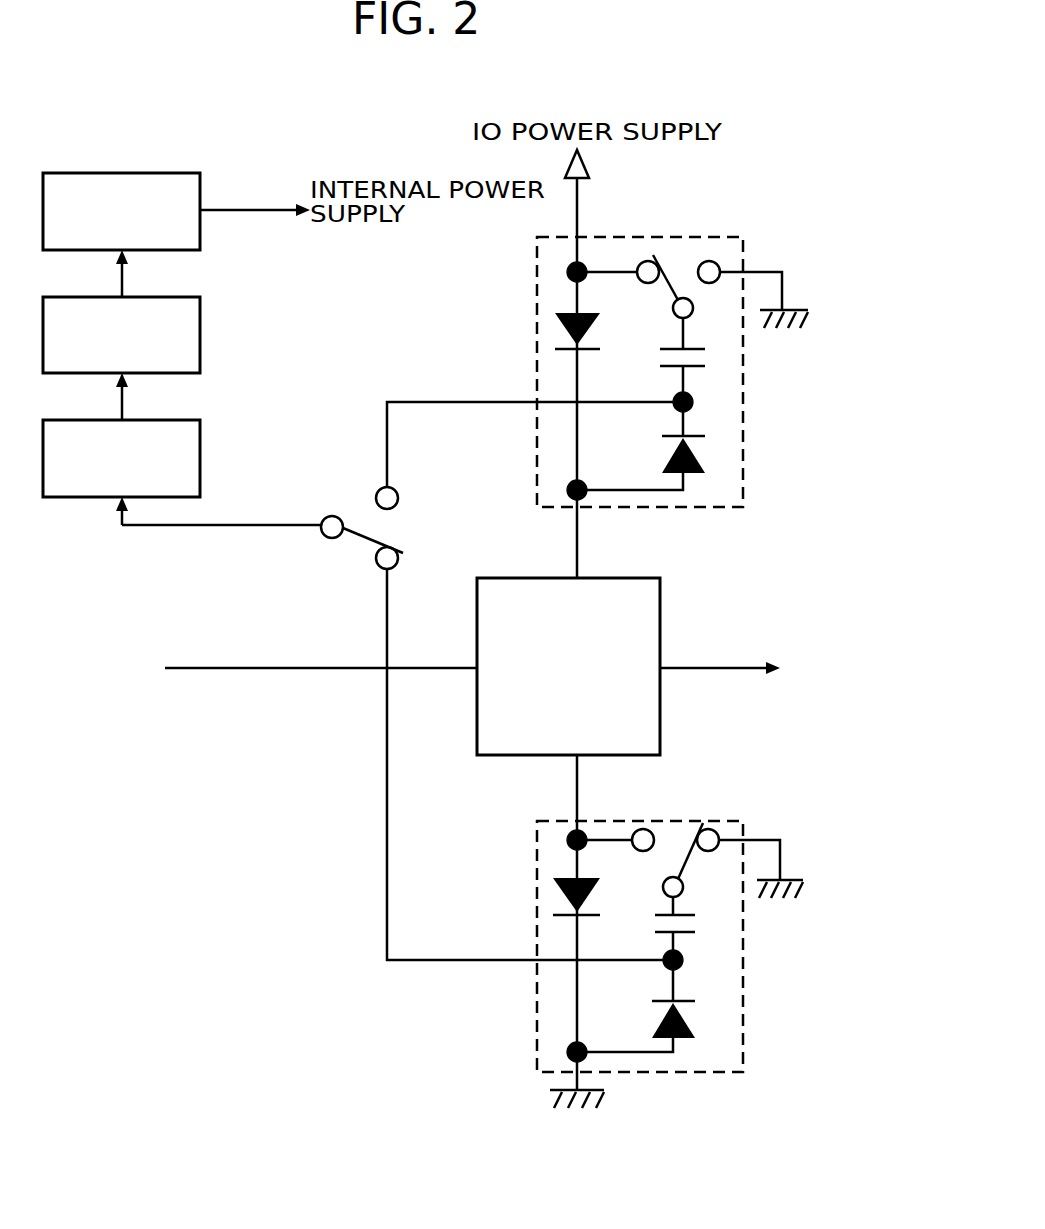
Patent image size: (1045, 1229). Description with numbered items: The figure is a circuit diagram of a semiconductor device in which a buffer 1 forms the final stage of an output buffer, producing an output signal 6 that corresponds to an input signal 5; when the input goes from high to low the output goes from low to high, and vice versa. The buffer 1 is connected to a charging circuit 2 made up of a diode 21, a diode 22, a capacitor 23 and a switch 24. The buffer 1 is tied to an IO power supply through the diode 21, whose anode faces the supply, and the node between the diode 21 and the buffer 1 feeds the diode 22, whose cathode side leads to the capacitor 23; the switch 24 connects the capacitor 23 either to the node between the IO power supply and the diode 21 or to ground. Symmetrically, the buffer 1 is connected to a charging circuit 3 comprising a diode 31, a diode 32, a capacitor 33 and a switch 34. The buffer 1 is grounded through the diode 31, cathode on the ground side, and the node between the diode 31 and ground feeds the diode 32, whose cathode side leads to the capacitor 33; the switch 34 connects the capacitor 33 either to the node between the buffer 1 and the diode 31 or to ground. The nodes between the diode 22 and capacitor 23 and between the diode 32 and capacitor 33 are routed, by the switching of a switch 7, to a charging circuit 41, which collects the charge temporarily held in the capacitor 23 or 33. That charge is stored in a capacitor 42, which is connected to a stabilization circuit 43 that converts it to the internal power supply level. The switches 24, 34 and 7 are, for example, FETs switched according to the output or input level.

The buffer 1 is at (660, 618).
The charging circuit 2 is at (636, 337).
The charging circuit 3 is at (632, 983).
The input signal 5 is at (186, 666).
The output signal 6 is at (750, 666).
The switch 7 is at (360, 540).
The diode 21 is at (555, 331).
The diode 22 is at (695, 446).
The capacitor 23 is at (693, 370).
The switch 24 is at (693, 318).
The diode 31 is at (553, 894).
The diode 32 is at (688, 1013).
The capacitor 33 is at (683, 934).
The switch 34 is at (685, 894).
The charging circuit 41 is at (200, 453).
The capacitor 42 is at (200, 326).
The stabilization circuit 43 is at (200, 222).